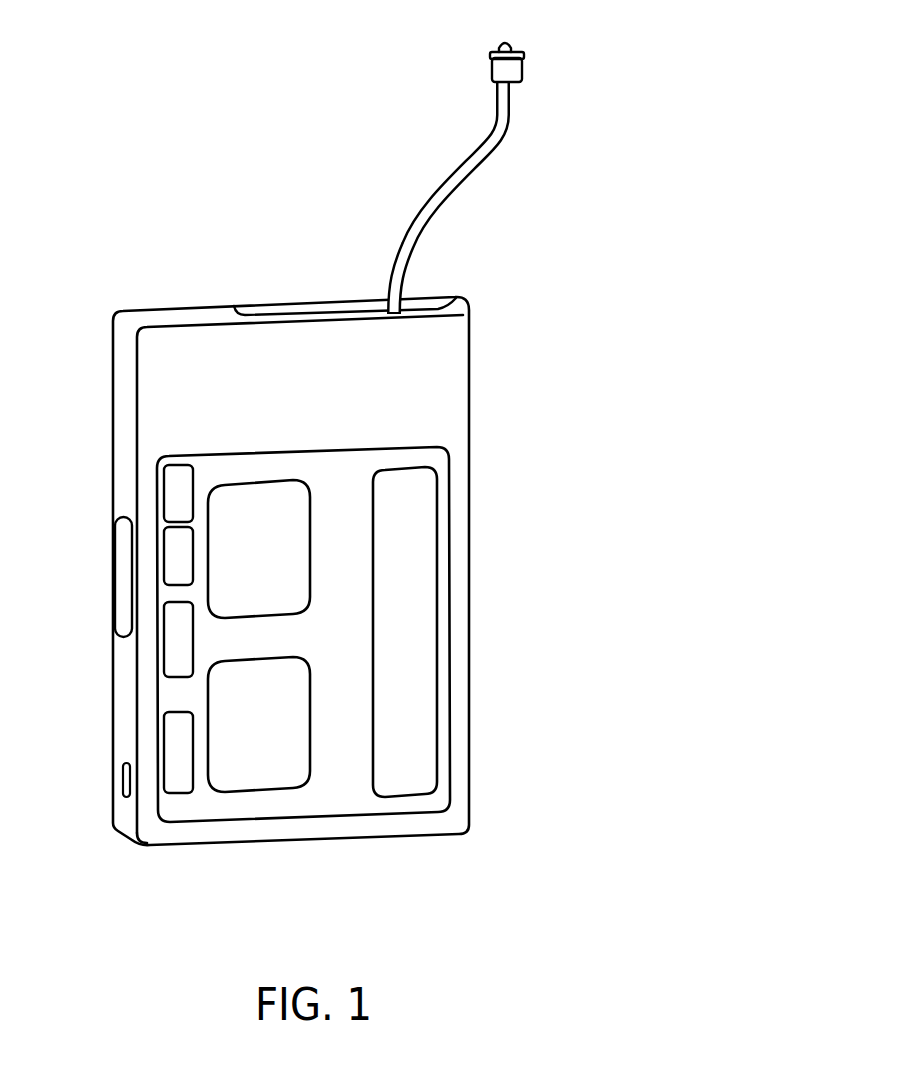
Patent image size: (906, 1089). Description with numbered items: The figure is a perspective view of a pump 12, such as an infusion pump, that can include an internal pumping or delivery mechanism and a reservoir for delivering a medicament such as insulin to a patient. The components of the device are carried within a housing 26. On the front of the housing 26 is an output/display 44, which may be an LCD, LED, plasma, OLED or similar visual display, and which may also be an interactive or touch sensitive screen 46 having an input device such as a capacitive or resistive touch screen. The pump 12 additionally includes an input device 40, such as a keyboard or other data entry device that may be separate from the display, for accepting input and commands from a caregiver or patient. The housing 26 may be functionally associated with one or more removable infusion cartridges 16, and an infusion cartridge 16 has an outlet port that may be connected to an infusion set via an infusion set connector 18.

The pump 12 is at (104, 205).
The infusion cartridge 16 is at (311, 312).
The infusion set connector 18 is at (512, 70).
The housing 26 is at (449, 368).
The input device 40 is at (122, 558).
The output/display 44 is at (440, 466).
The touch sensitive screen 46 is at (416, 675).